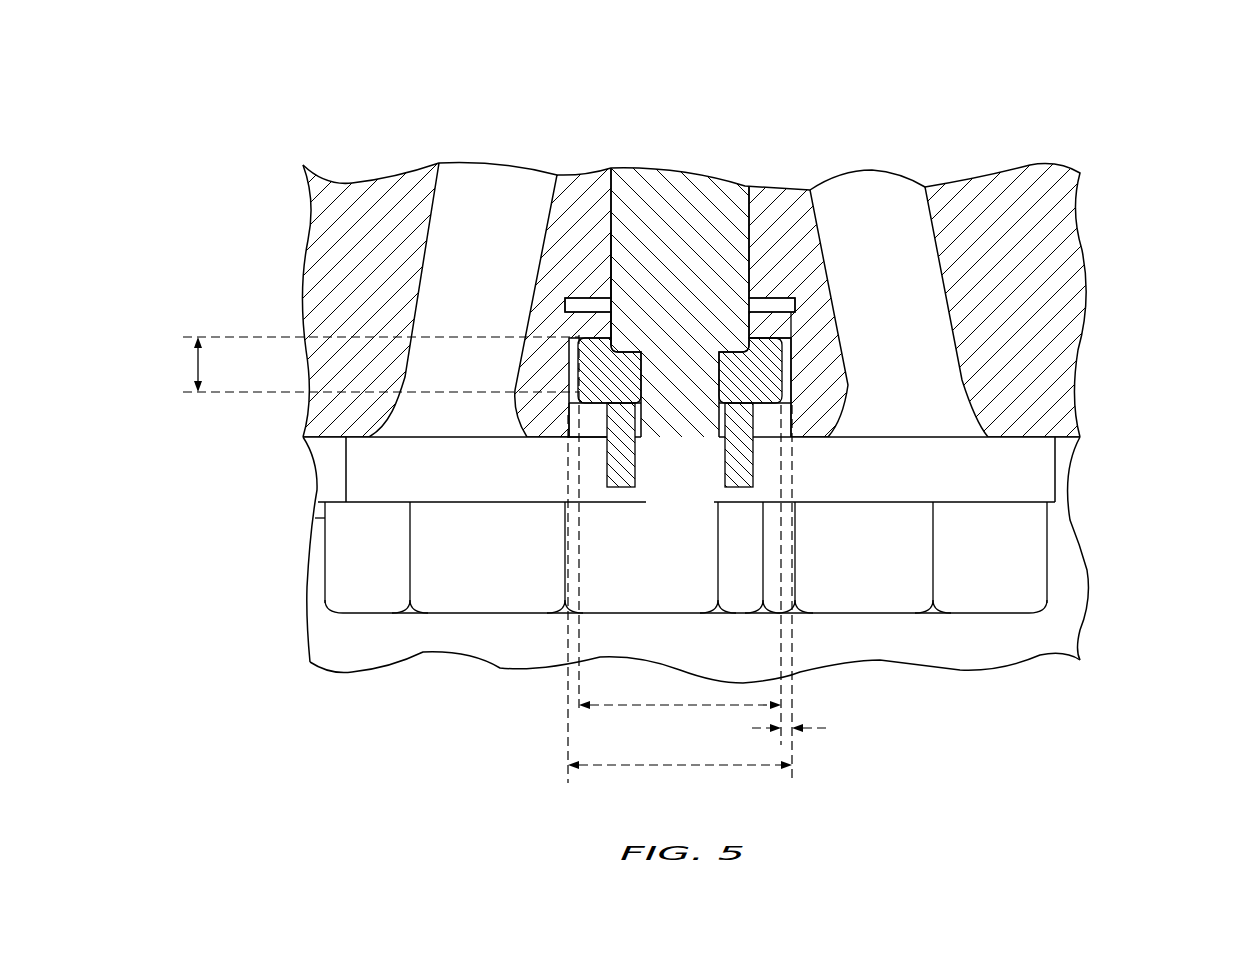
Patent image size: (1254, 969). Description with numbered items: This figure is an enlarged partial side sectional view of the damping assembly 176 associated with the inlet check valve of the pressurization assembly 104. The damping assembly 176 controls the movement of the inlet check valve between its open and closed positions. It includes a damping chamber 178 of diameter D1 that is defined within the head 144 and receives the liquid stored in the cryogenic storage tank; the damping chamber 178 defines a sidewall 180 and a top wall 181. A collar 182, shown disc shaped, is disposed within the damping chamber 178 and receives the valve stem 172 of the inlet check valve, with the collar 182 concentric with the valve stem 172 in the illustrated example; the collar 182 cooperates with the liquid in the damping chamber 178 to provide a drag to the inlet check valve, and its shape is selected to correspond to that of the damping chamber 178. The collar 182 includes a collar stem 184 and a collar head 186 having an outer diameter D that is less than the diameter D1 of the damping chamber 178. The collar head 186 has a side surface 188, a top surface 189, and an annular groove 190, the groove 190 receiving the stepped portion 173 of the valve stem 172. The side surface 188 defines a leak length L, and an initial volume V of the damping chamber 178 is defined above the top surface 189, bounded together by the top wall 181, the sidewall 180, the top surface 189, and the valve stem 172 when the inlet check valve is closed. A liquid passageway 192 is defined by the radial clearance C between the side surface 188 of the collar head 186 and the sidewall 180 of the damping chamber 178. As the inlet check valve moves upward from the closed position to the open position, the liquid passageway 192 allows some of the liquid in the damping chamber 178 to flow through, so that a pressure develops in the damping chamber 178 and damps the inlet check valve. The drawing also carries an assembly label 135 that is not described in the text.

The pressurization assembly 104 is at (1155, 103).
The valve assembly 135 is at (1107, 187).
The head 144 is at (1080, 250).
The damping assembly 176 is at (783, 280).
The damping chamber 178 is at (760, 318).
The sidewall 180 is at (786, 320).
The stepped portion 173 is at (793, 383).
The side surface 188 is at (745, 325).
The valve stem 172 is at (753, 460).
The top wall 181 is at (607, 318).
The annular groove 190 is at (617, 345).
The top surface 189 is at (610, 258).
The collar head 186 is at (562, 366).
The collar 182 is at (518, 362).
The liquid passageway 192 is at (572, 432).
The collar stem 184 is at (607, 472).
The initial volume V is at (574, 310).
The leak length L is at (379, 364).
The outer diameter D is at (680, 540).
The diameter D1 is at (680, 594).
The radial clearance C is at (788, 730).